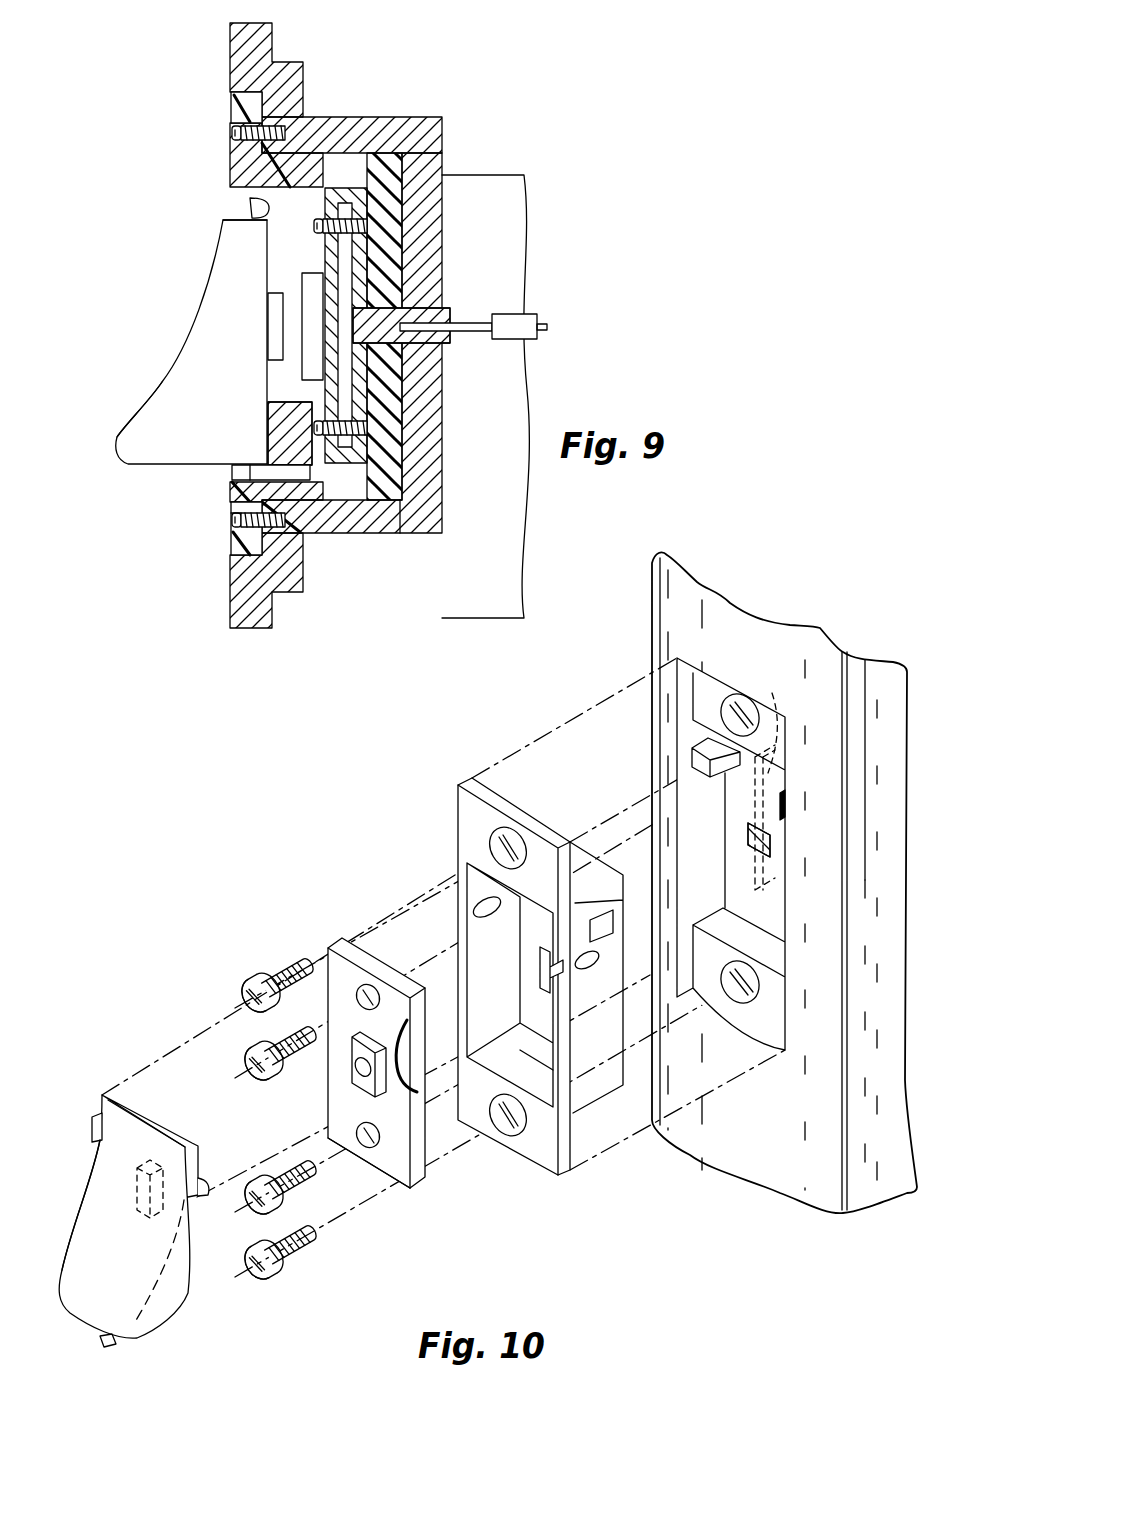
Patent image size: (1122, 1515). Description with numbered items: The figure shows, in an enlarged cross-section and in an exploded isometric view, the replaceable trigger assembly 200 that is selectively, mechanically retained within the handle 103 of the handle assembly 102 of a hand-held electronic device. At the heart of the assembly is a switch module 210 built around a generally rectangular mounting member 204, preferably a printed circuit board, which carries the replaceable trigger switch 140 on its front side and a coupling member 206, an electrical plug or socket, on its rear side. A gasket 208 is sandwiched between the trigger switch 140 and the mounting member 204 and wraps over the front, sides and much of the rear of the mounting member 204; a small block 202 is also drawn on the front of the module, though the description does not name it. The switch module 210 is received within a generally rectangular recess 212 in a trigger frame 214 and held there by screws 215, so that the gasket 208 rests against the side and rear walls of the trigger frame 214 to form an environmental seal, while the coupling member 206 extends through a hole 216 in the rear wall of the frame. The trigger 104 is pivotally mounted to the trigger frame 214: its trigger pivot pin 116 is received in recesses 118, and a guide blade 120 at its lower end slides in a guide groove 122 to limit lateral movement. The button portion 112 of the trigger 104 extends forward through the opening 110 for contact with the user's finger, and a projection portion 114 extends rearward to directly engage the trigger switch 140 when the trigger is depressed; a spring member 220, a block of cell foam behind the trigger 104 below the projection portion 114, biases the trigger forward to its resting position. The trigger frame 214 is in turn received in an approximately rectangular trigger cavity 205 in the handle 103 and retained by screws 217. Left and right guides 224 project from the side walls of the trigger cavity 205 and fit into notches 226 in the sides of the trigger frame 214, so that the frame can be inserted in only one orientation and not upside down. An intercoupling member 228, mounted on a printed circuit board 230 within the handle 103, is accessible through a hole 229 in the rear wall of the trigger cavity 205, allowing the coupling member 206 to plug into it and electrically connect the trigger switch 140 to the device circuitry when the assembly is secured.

In FIG. 10, the handle assembly 102 is at (818, 585).
In FIG. 9, the handle 103 is at (257, 50).
In FIG. 10, the handle 103 is at (733, 627).
In FIG. 9, the trigger 104 is at (220, 313).
In FIG. 10, the trigger 104 is at (118, 1130).
In FIG. 9, the opening 110 is at (400, 493).
In FIG. 9, the button portion 112 is at (162, 382).
In FIG. 10, the button portion 112 is at (97, 1303).
In FIG. 9, the projection portion 114 is at (275, 342).
In FIG. 10, the projection portion 114 is at (145, 1202).
In FIG. 9, the trigger pivot pin 116 is at (257, 197).
In FIG. 10, the trigger pivot pin 116 is at (92, 1133).
In FIG. 9, the recesses 118 is at (222, 211).
In FIG. 10, the recesses 118 is at (587, 965).
In FIG. 9, the guide blade 120 is at (233, 473).
In FIG. 10, the guide blade 120 is at (108, 1344).
In FIG. 9, the guide groove 122 is at (241, 518).
In FIG. 10, the guide groove 122 is at (522, 1075).
In FIG. 9, the replaceable trigger switch 140 is at (293, 378).
In FIG. 10, the replaceable trigger assembly 200 is at (302, 822).
In FIG. 10, the spacer block 202 is at (350, 1085).
In FIG. 9, the mounting member 204 is at (340, 255).
In FIG. 10, the mounting member 204 is at (405, 1090).
In FIG. 10, the trigger cavity 205 is at (728, 822).
In FIG. 9, the coupling member 206 is at (423, 365).
In FIG. 9, the gasket 208 is at (377, 147).
In FIG. 10, the gasket 208 is at (357, 945).
In FIG. 10, the switch module 210 is at (397, 1170).
In FIG. 9, the recess 212 is at (340, 127).
In FIG. 10, the recess 212 is at (527, 907).
In FIG. 9, the trigger frame 214 is at (238, 168).
In FIG. 10, the trigger frame 214 is at (457, 840).
In FIG. 9, the screws 215 is at (242, 122).
In FIG. 10, the screws 215 is at (250, 1078).
In FIG. 9, the hole 216 is at (395, 395).
In FIG. 10, the hole 216 is at (540, 965).
In FIG. 10, the screws 217 is at (240, 1000).
In FIG. 9, the spring member 220 is at (282, 440).
In FIG. 10, the guides 224 is at (692, 752).
In FIG. 10, the notches 226 is at (600, 910).
In FIG. 9, the intercoupling member 228 is at (530, 320).
In FIG. 10, the intercoupling member 228 is at (773, 830).
In FIG. 9, the hole 229 is at (408, 308).
In FIG. 10, the hole 229 is at (748, 826).
In FIG. 9, the printed circuit board 230 is at (463, 183).
In FIG. 10, the printed circuit board 230 is at (760, 757).